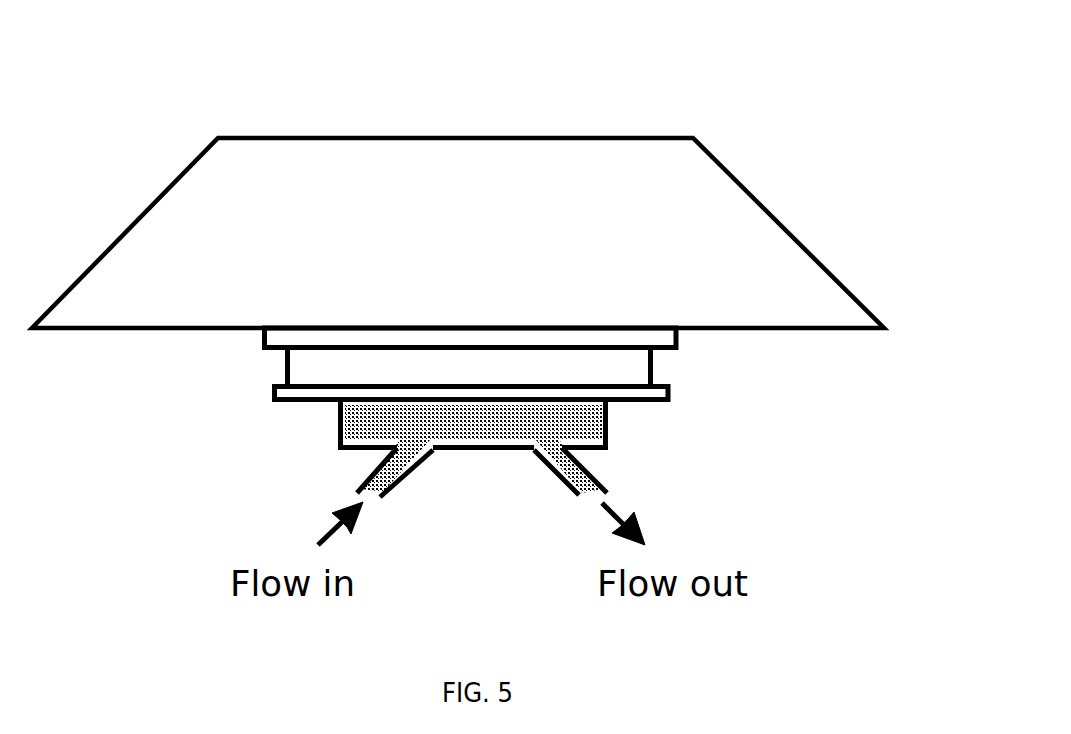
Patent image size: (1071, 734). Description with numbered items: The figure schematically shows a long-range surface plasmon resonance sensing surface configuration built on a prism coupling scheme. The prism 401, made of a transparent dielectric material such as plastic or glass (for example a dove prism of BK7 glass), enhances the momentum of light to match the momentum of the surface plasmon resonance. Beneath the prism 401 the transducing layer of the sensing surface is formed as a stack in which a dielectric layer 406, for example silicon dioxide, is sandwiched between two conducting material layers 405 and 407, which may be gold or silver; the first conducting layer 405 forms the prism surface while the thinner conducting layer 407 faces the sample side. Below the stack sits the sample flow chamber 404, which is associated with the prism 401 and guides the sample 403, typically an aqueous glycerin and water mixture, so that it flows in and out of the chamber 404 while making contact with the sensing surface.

The prism 401 is at (583, 128).
The conducting material layer 405 is at (258, 343).
The dielectric layer 406 is at (660, 367).
The conducting material layer 407 is at (290, 407).
The sample 403 is at (617, 433).
The sample flow chamber 404 is at (557, 472).